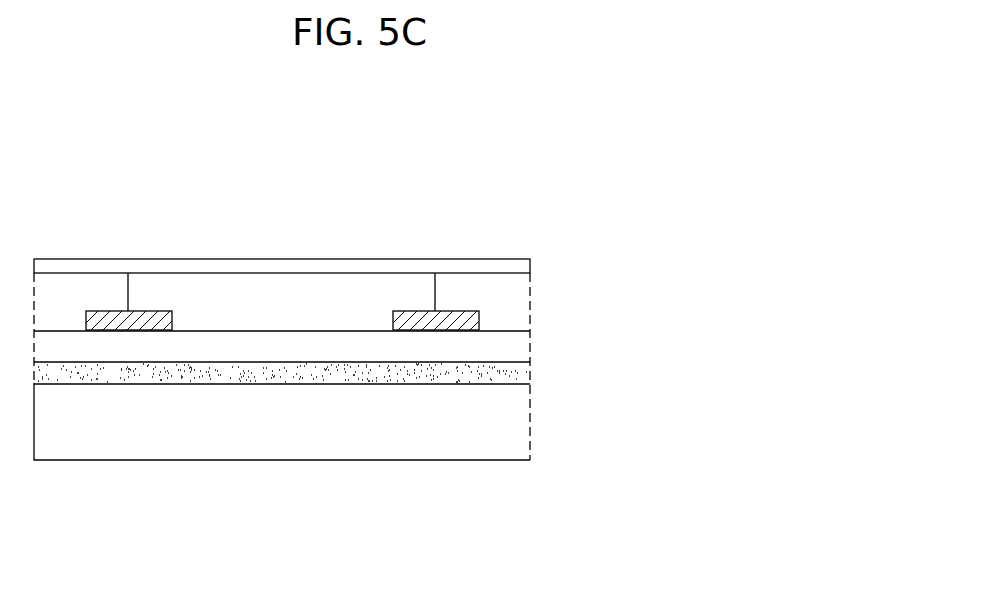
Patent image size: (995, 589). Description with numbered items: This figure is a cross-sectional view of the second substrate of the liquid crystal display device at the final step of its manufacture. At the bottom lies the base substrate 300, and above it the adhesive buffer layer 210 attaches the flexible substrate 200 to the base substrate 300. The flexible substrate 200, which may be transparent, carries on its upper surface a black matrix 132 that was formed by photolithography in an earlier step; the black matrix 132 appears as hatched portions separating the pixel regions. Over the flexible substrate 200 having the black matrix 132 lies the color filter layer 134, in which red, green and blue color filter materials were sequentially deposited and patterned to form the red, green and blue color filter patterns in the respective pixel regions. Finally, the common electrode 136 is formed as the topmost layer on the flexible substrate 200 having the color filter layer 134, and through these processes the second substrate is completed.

The black matrix 132 is at (148, 320).
The color filter layer 134 is at (455, 290).
The common electrode 136 is at (482, 268).
The flexible substrate 200 is at (512, 338).
The adhesive buffer layer 210 is at (512, 368).
The base substrate 300 is at (500, 427).